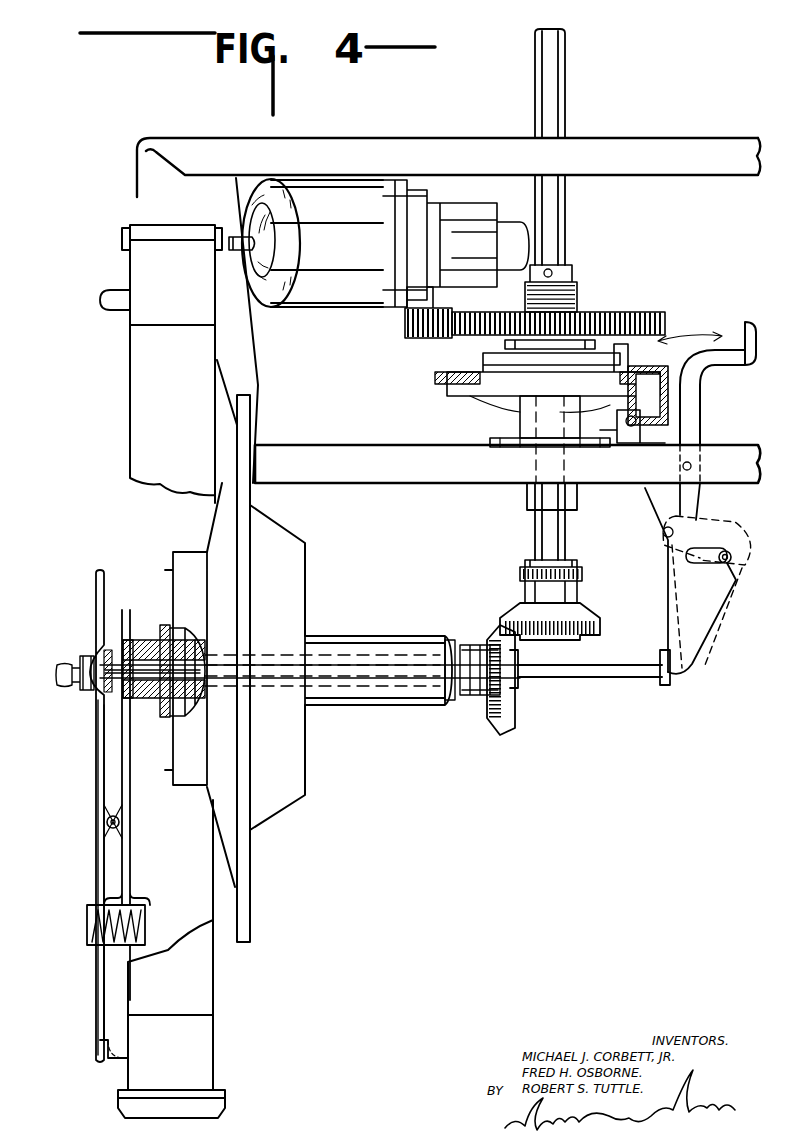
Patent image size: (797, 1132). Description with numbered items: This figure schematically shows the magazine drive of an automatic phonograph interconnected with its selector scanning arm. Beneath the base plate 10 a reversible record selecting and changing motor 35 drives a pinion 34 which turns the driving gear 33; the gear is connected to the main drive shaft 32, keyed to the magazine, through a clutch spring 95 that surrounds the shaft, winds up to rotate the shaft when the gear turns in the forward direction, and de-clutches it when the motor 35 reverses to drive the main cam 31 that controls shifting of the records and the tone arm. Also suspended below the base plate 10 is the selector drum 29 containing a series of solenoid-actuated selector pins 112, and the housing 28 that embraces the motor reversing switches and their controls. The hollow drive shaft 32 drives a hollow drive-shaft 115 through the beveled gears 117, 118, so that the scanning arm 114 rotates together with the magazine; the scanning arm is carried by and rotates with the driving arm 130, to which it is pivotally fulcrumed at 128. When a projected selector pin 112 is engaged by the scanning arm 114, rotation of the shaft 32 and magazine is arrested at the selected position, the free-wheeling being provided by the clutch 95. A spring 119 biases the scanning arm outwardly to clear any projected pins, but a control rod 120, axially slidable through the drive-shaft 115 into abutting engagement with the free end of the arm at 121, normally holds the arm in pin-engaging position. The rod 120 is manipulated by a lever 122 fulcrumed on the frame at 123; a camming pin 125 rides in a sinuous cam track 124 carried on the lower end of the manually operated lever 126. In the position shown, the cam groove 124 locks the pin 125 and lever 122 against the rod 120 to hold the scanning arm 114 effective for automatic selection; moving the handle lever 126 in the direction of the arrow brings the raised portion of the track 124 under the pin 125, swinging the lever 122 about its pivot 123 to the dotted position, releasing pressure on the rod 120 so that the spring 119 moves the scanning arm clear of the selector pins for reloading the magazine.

The base plate 10 is at (300, 152).
The housing 28 is at (305, 790).
The selector drum 29 is at (192, 986).
The main cam 31 is at (668, 398).
The main drive shaft 32 is at (565, 206).
The driving gear 33 is at (665, 316).
The pinion 34 is at (412, 326).
The record selecting and changing motor 35 is at (379, 243).
The clutch spring 95 is at (575, 292).
The selector pin 112 is at (100, 298).
The scanning arm 114 is at (98, 1005).
The hollow drive-shaft 115 is at (198, 700).
The beveled gear 117 is at (584, 620).
The beveled gear 118 is at (508, 700).
The spring 119 is at (88, 926).
The control rod 120 is at (136, 644).
The abutting engagement 121 is at (96, 652).
The lever 122 is at (665, 688).
The fulcrum 123 is at (662, 536).
The sinuous cam track 124 is at (714, 542).
The camming pin 125 is at (729, 566).
The manually operated lever 126 is at (728, 346).
The fulcrum 128 is at (107, 822).
The driving arm 130 is at (132, 860).